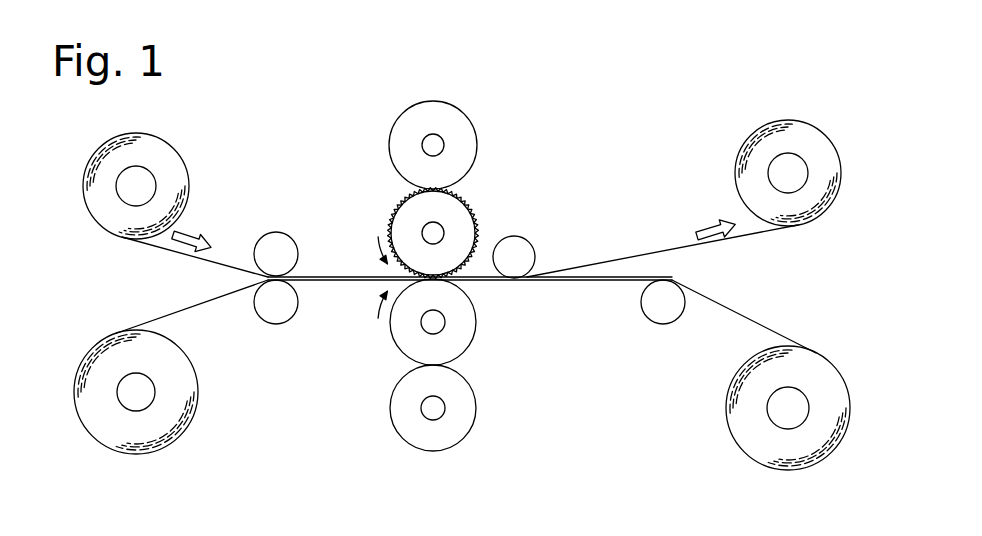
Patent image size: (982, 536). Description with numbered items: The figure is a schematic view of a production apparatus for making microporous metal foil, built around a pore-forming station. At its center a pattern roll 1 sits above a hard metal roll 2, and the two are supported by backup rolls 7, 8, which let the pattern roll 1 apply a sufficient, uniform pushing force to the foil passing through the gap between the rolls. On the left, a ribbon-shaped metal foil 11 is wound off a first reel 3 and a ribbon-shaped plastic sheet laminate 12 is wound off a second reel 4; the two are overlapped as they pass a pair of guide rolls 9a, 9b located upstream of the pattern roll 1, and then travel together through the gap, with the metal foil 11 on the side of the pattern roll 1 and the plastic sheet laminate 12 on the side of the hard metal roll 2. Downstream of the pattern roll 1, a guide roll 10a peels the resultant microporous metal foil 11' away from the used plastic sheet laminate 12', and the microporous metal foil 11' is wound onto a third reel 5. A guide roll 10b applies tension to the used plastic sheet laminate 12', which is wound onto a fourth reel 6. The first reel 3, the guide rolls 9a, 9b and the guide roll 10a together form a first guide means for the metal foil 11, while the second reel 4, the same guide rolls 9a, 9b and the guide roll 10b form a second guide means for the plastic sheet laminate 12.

The pattern roll 1 is at (462, 216).
The hard metal roll 2 is at (468, 325).
The first reel 3 is at (130, 187).
The second reel 4 is at (130, 392).
The third reel 5 is at (790, 173).
The fourth reel 6 is at (790, 408).
The backup roll 7 is at (465, 135).
The backup roll 8 is at (468, 409).
The guide roll 9a is at (285, 247).
The guide roll 9b is at (289, 301).
The guide roll 10a is at (524, 247).
The guide roll 10b is at (658, 314).
The metal foil 11 is at (377, 205).
The plastic sheet laminate 12 is at (373, 367).
The microporous metal foil 11' is at (662, 236).
The used plastic sheet laminate 12' is at (744, 312).